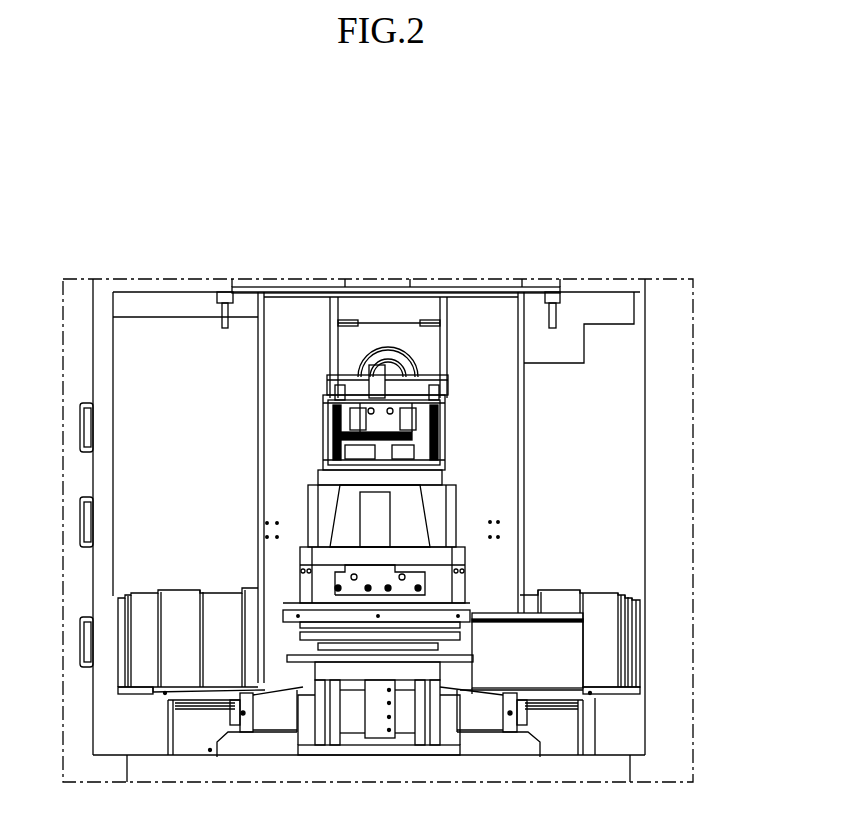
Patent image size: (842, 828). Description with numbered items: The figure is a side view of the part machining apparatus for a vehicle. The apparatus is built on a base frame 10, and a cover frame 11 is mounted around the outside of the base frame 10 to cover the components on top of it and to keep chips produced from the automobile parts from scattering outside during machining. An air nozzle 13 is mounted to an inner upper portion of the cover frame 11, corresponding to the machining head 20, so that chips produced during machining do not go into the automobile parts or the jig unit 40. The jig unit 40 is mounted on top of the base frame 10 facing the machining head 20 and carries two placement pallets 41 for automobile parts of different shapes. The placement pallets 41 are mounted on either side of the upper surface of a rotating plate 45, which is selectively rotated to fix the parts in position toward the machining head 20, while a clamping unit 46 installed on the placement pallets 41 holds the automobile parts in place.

The base frame 10 is at (619, 770).
The cover frame 11 is at (648, 380).
The air nozzle 13 is at (214, 310).
The machining head 20 is at (388, 350).
The jig unit 40 is at (312, 416).
The placement pallet 41 is at (448, 512).
The rotating plate 45 is at (468, 615).
The clamping unit 46 is at (377, 383).